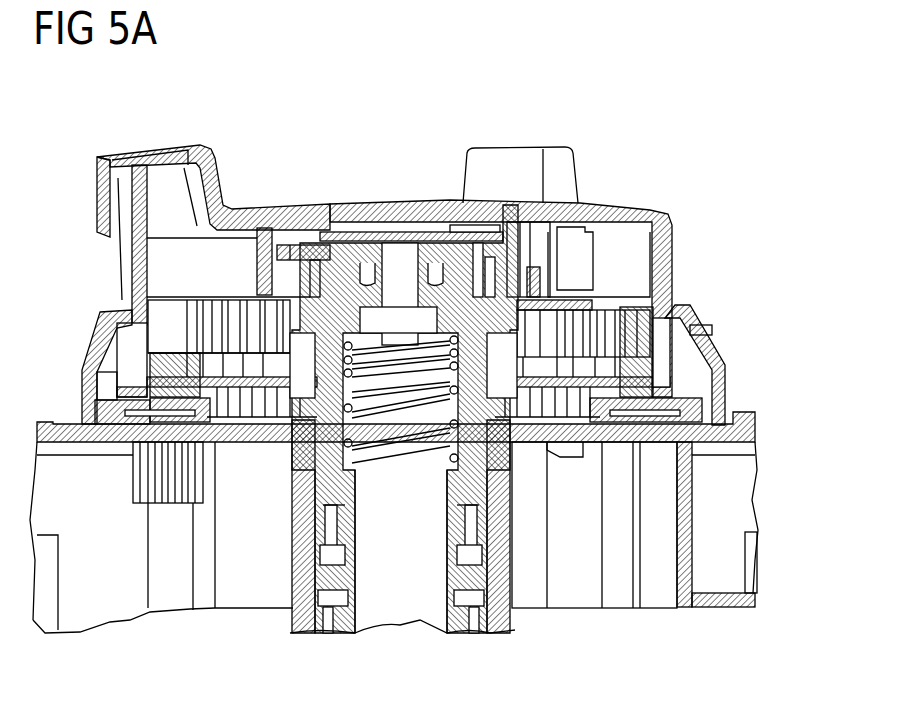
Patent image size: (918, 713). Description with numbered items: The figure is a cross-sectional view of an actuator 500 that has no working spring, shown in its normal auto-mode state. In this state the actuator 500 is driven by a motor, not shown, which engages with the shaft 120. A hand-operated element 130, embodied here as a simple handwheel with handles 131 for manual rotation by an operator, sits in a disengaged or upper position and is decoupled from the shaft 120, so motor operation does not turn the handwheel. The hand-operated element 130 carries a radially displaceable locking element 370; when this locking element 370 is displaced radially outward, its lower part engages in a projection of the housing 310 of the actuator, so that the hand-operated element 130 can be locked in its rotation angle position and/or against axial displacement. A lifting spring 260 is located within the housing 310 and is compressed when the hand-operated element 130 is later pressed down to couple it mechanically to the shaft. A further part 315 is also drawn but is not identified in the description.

The actuator 500 is at (411, 381).
The hand-operated element 130 is at (282, 180).
The handles 131 is at (197, 147).
The radially displaceable locking element 370 is at (606, 212).
The flange 315 is at (708, 345).
The housing 310 is at (500, 617).
The lifting spring 260 is at (375, 413).
The shaft 120 is at (415, 612).